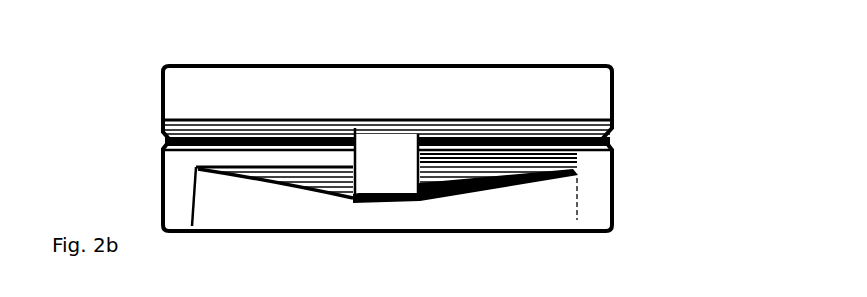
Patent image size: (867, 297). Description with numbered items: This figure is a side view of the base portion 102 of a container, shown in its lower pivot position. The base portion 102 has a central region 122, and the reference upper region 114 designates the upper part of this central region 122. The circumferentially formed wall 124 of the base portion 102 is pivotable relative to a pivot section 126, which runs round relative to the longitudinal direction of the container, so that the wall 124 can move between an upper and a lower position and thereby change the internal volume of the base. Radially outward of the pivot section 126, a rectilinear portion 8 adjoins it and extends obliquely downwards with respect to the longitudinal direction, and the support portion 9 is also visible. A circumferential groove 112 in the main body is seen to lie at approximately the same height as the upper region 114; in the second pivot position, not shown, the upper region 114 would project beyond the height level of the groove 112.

The base portion 102 is at (140, 188).
The circumferential groove 112 is at (165, 133).
The upper region 114 is at (390, 118).
The central region 122 is at (400, 165).
The wall 124 is at (520, 172).
The pivot section 126 is at (198, 172).
The rectilinear portion 8 is at (198, 172).
The support portion 9 is at (596, 235).